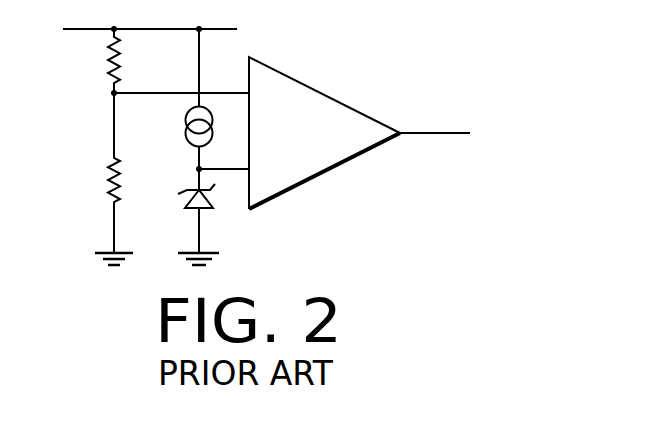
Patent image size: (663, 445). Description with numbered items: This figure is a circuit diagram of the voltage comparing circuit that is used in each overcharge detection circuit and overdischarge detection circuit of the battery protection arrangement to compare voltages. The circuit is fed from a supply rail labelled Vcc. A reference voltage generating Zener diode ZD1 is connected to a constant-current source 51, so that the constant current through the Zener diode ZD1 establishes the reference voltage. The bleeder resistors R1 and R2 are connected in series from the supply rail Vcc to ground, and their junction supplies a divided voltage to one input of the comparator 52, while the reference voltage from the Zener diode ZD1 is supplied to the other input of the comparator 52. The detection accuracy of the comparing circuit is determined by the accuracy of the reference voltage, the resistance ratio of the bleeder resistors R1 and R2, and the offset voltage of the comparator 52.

The constant-current source 51 is at (185, 127).
The comparator 52 is at (327, 97).
The bleeder resistor R1 is at (96, 61).
The bleeder resistor R2 is at (103, 179).
The reference voltage generating Zener diode ZD1 is at (220, 224).
The supply voltage Vcc is at (266, 18).